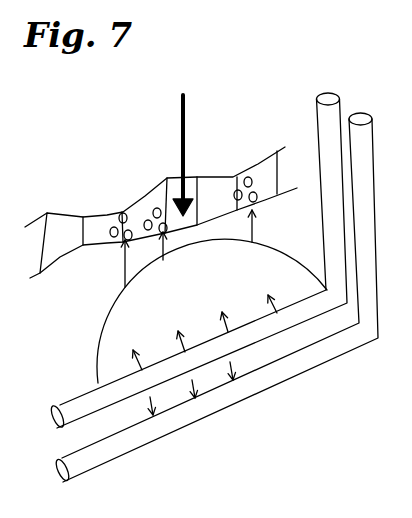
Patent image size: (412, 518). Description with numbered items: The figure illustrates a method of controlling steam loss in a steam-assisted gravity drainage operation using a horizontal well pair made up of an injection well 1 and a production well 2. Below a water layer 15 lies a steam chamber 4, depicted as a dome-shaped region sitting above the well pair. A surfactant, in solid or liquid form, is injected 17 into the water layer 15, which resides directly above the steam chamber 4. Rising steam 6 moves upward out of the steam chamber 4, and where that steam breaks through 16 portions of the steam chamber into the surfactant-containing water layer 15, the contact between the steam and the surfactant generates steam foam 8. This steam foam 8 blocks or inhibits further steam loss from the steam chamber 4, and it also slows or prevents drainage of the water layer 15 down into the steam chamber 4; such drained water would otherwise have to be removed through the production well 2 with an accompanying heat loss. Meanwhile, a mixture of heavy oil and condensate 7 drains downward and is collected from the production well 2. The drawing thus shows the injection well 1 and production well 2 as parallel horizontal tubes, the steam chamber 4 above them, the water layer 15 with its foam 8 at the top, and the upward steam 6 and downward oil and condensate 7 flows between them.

The injection well 1 is at (315, 113).
The production well 2 is at (374, 140).
The steam chamber 4 is at (95, 337).
The rising steam 6 is at (205, 332).
The mixture of heavy oil and condensate 7 is at (203, 385).
The steam foam 8 is at (178, 208).
The water layer 15 is at (70, 213).
The steam breakthrough 16 is at (177, 249).
The surfactant injection 17 is at (183, 130).